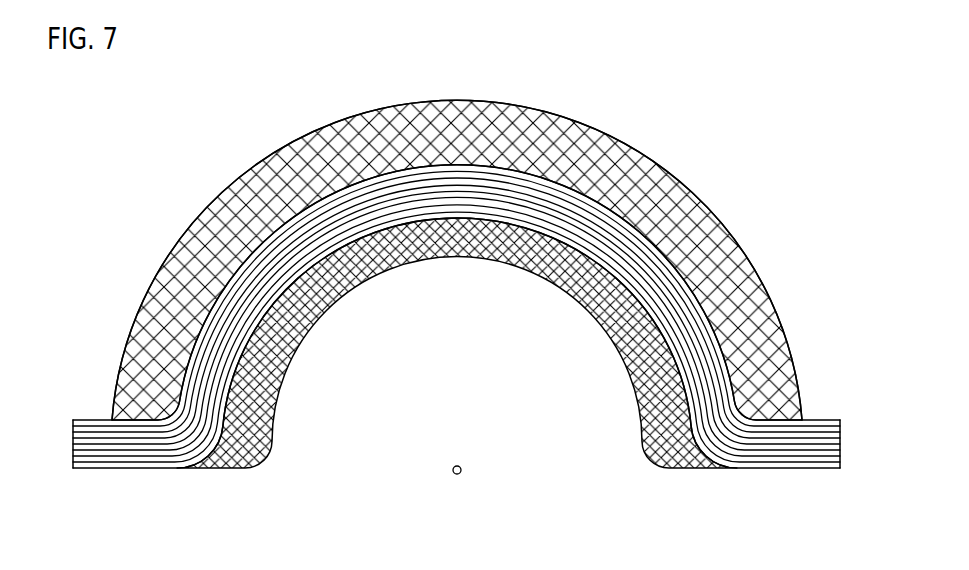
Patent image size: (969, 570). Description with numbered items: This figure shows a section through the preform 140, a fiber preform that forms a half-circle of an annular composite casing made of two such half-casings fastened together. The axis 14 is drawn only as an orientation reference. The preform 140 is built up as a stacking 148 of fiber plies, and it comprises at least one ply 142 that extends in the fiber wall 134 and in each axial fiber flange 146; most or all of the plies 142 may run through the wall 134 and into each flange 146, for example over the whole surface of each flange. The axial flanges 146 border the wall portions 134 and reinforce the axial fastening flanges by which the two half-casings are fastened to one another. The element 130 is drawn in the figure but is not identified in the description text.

The preform 140 is at (729, 149).
The stacking 148 is at (223, 141).
The outer surface 130 is at (186, 236).
The ply 142 is at (443, 202).
The wall portion 134 is at (303, 338).
The axial fiber flange 146 is at (131, 470).
The axis 14 is at (457, 465).